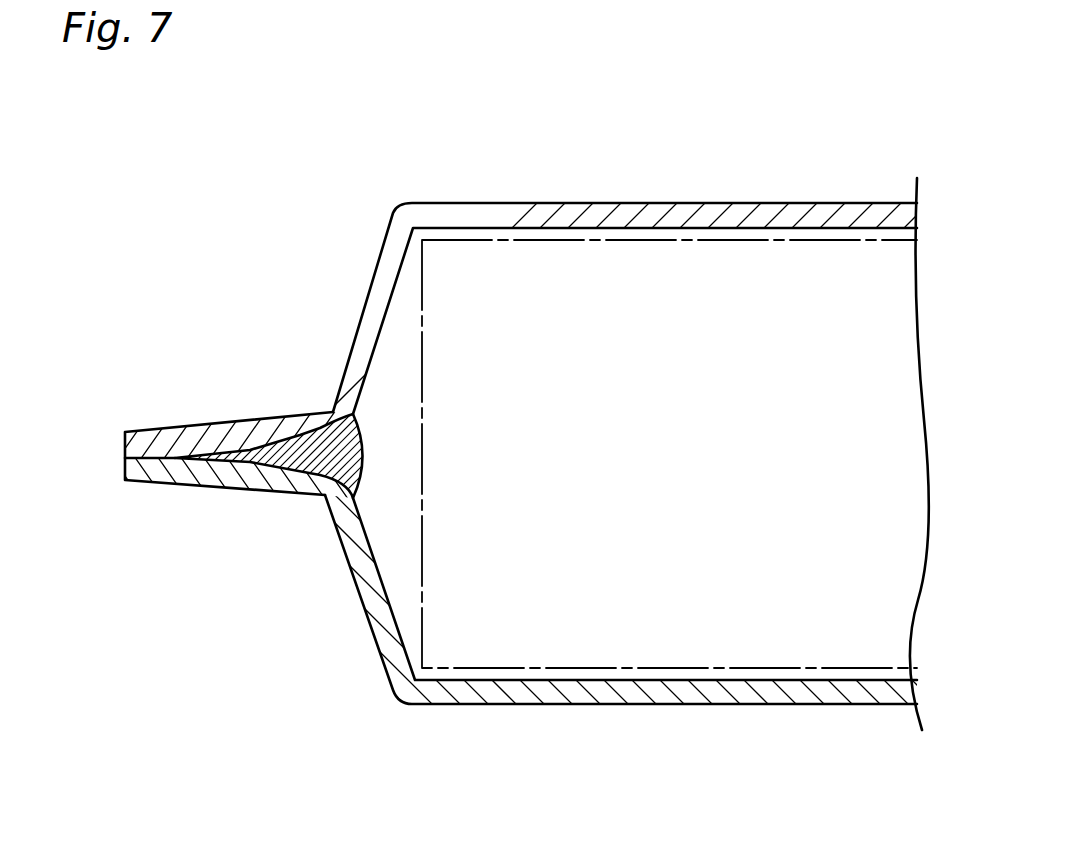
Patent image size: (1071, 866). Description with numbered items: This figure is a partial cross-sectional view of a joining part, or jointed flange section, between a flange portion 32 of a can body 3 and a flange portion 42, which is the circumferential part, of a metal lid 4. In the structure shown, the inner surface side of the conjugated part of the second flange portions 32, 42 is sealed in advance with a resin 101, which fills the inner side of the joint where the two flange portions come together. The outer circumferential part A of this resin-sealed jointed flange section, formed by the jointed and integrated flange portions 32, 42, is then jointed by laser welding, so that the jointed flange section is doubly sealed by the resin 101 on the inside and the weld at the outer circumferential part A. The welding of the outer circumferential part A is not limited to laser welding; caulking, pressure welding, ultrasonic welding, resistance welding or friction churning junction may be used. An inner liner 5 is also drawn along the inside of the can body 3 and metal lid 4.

The can body 3 is at (630, 210).
The metal lid 4 is at (650, 688).
The inner film / liner 5 is at (713, 240).
The flange portion 32 is at (223, 427).
The flange portion 42 is at (217, 477).
The resin 101 is at (362, 455).
The outer circumferential part A is at (152, 415).